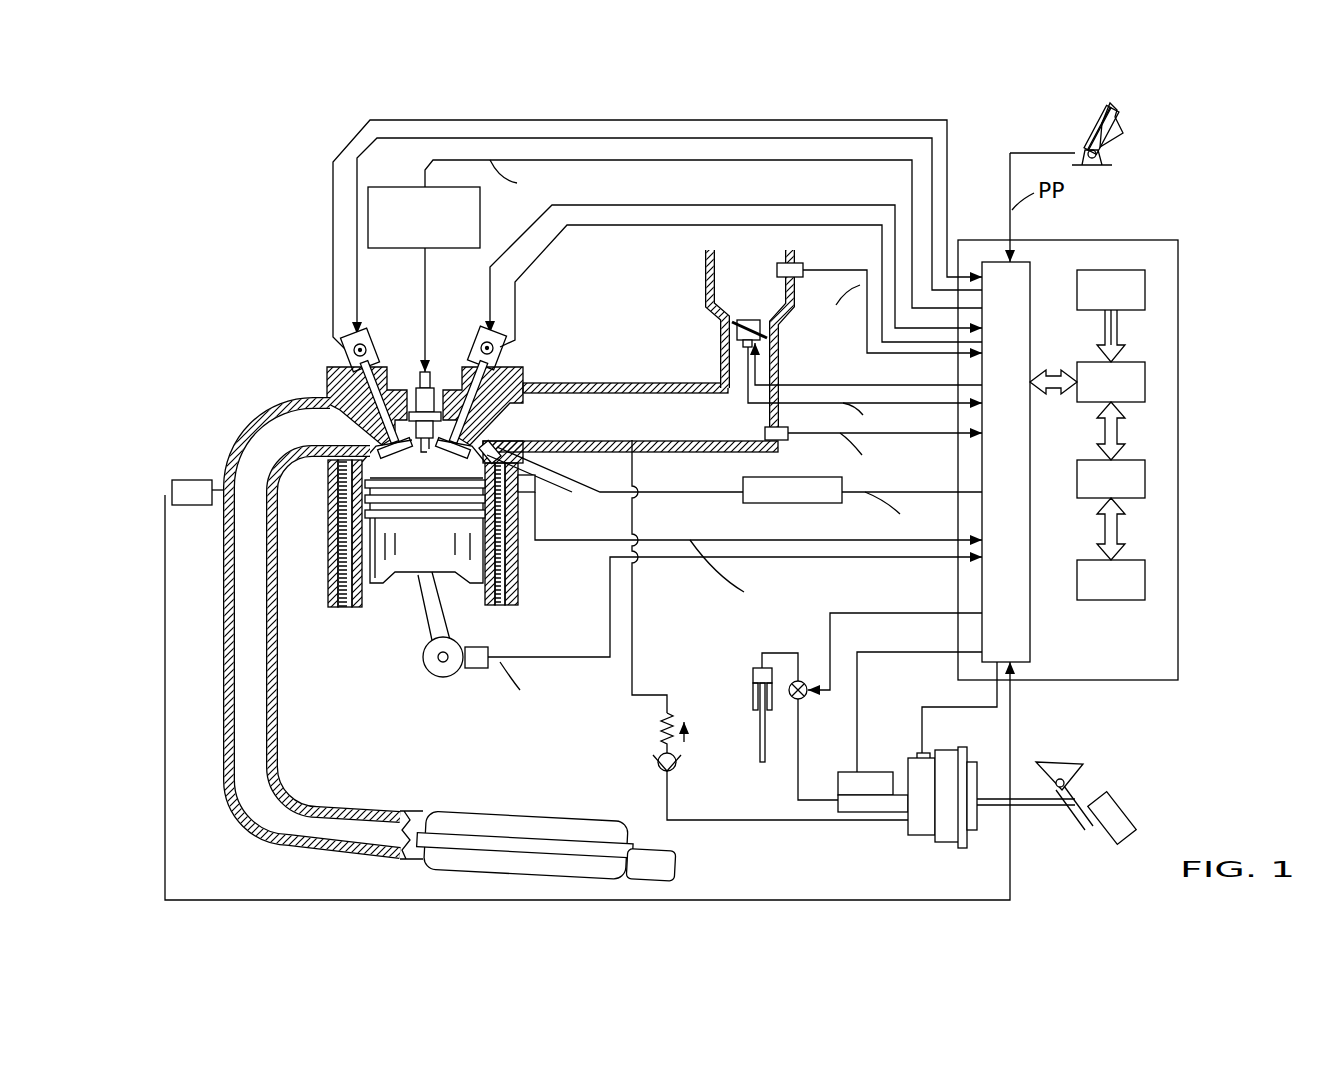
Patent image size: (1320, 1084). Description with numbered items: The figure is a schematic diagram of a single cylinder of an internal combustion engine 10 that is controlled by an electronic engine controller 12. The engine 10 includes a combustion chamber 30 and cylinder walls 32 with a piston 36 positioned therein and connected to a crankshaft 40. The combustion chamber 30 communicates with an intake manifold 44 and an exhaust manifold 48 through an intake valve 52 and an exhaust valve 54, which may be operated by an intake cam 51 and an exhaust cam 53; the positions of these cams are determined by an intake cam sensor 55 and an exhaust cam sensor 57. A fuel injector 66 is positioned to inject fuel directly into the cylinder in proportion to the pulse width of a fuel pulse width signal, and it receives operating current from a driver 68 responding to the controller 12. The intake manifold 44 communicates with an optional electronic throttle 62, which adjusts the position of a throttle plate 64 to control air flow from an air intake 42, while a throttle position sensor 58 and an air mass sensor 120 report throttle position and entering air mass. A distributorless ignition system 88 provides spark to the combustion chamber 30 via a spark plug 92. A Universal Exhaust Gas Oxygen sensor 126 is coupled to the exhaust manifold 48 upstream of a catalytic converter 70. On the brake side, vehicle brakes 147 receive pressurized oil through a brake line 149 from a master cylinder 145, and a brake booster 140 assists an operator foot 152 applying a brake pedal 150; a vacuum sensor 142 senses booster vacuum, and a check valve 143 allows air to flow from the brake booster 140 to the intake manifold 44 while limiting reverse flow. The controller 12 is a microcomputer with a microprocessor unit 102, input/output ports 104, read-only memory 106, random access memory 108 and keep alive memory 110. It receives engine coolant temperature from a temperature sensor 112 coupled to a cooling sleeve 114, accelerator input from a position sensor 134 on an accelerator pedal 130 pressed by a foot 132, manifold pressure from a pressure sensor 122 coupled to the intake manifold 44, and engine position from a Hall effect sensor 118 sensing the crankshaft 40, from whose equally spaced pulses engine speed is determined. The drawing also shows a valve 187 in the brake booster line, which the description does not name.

The internal combustion engine 10 is at (262, 325).
The electronic engine controller 12 is at (1165, 240).
The combustion chamber 30 is at (423, 460).
The cylinder walls 32 is at (370, 612).
The piston 36 is at (405, 557).
The crankshaft 40 is at (428, 668).
The air intake 42 is at (762, 297).
The intake manifold 44 is at (700, 430).
The exhaust manifold 48 is at (304, 437).
The intake cam 51 is at (478, 333).
The intake valve 52 is at (467, 428).
The exhaust cam 53 is at (370, 333).
The exhaust valve 54 is at (348, 427).
The intake cam sensor 55 is at (495, 352).
The exhaust cam sensor 57 is at (350, 358).
The throttle position sensor 58 is at (730, 350).
The electronic throttle 62 is at (765, 327).
The throttle plate 64 is at (735, 330).
The fuel injector 66 is at (611, 475).
The driver 68 is at (770, 503).
The catalytic converter 70 is at (440, 812).
The distributorless ignition system 88 is at (383, 187).
The spark plug 92 is at (432, 385).
The microprocessor unit 102 is at (1145, 378).
The input/output ports 104 is at (1030, 272).
The read-only memory 106 is at (1145, 288).
The random access memory 108 is at (1145, 478).
The keep alive memory 110 is at (1145, 578).
The temperature sensor 112 is at (535, 490).
The cooling sleeve 114 is at (502, 560).
The Hall effect sensor 118 is at (472, 675).
The air mass sensor 120 is at (800, 263).
The pressure sensor 122 is at (790, 440).
The Universal Exhaust Gas Oxygen sensor 126 is at (172, 483).
The accelerator pedal 130 is at (1075, 130).
The foot 132 is at (1120, 113).
The position sensor 134 is at (1102, 154).
The brake booster 140 is at (955, 752).
The vacuum sensor 142 is at (918, 753).
The check valve 143 is at (658, 755).
The master cylinder 145 is at (848, 772).
The vehicle brakes 147 is at (757, 668).
The brake line 149 is at (790, 652).
The brake pedal 150 is at (1083, 830).
The operator foot 152 is at (1120, 800).
The valve 187 is at (808, 698).